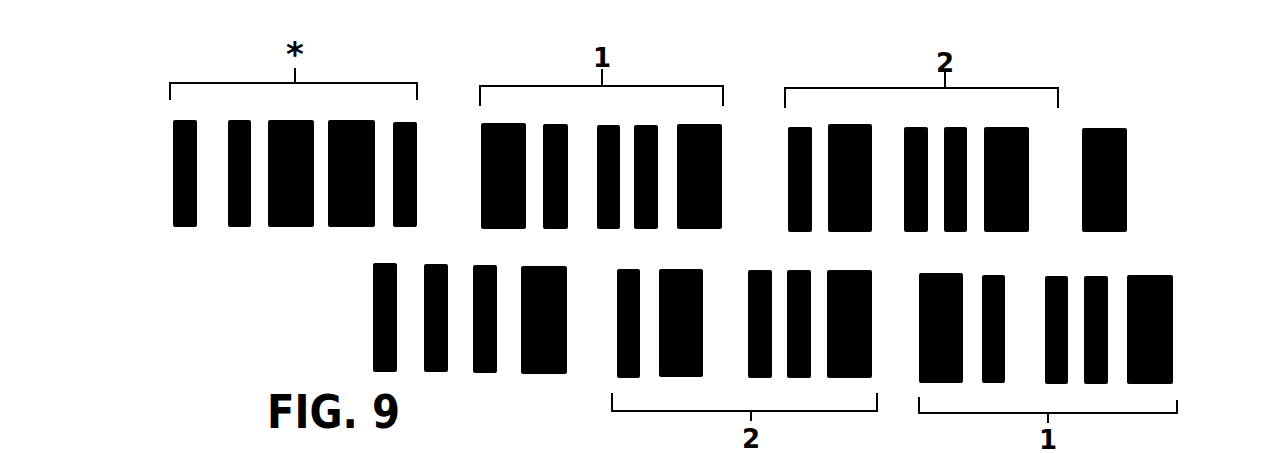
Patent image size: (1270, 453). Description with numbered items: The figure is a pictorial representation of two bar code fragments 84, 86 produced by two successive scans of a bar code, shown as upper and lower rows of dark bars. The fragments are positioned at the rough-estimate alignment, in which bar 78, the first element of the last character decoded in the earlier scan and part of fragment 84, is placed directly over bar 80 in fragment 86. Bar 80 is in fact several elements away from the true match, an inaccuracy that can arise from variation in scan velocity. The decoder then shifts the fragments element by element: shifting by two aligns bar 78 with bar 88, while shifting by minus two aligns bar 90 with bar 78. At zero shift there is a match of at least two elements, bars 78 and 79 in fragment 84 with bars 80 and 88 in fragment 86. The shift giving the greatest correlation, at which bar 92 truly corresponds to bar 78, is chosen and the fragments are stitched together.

The bar 78 is at (792, 127).
The element 79 is at (856, 125).
The bar 80 is at (793, 270).
The bar code fragment 84 is at (157, 170).
The bar code fragment 86 is at (355, 309).
The bar 88 is at (863, 270).
The bar 90 is at (757, 270).
The bar 92 is at (628, 269).